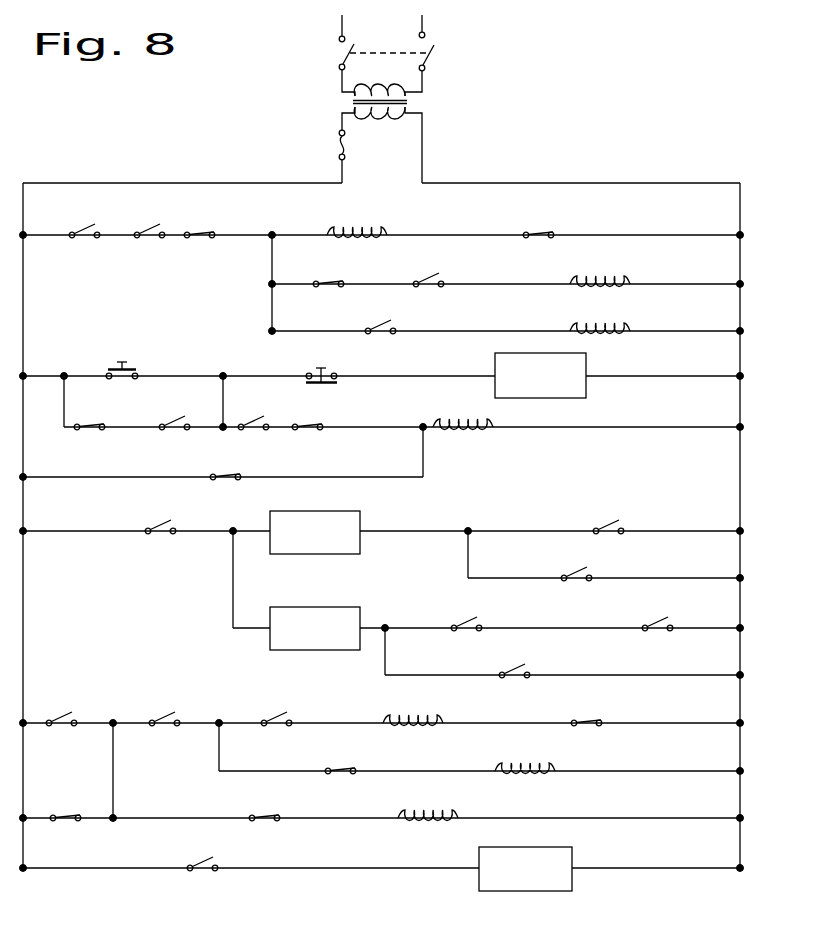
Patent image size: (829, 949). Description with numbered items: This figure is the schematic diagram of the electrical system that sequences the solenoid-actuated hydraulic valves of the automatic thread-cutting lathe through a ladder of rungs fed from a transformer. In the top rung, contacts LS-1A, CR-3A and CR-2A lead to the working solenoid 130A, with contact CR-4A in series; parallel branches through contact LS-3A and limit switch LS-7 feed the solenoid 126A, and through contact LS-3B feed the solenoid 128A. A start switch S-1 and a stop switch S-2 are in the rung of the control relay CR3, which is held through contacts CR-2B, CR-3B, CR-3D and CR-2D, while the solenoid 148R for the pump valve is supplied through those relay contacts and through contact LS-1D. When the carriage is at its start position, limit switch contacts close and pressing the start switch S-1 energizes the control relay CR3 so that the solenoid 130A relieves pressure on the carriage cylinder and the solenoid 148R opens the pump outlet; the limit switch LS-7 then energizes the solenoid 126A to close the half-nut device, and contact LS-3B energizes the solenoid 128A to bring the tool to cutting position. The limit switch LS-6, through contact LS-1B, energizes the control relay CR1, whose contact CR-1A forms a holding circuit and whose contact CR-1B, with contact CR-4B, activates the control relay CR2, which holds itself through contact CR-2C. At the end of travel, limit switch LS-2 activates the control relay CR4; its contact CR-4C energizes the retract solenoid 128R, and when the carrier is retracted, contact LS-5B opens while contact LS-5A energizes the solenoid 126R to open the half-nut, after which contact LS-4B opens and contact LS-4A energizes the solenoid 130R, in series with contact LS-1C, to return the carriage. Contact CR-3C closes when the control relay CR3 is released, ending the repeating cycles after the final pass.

The contact LS-1A of limit switch LS-1 LS-1A is at (95, 221).
The contact CR-3A of relay CR-3 CR-3A is at (158, 221).
The contact CR-2A of relay CR-2 CR-2A is at (217, 221).
The solenoid 130A is at (357, 221).
The contact CR-4A of relay CR-4 CR-4A is at (536, 221).
The contact LS-3A of limit switch LS-3 LS-3A is at (321, 270).
The limit switch LS-7 is at (428, 270).
The solenoid 126A is at (600, 270).
The contact LS-3B of limit switch LS-3 LS-3B is at (376, 318).
The solenoid 128A is at (600, 318).
The start switch S-1 is at (122, 359).
The stop switch S-2 is at (321, 361).
The relay CR-3 CR3 is at (540, 375).
The contact CR-2B of relay CR-2 CR-2B is at (90, 414).
The contact CR-3B of relay CR-3 CR-3B is at (174, 414).
The contact CR-3D of relay CR-3 CR-3D is at (251, 414).
The contact CR-2D of relay CR-2 CR-2D is at (314, 414).
The solenoid 148R is at (463, 414).
The contact LS-1D of limit switch LS-1 LS-1D is at (228, 467).
The limit switch LS-6 is at (160, 516).
The relay CR-1 CR1 is at (315, 532).
The contact CR-1A of relay CR-1 CR-1A is at (604, 517).
The contact LS-1B of limit switch LS-1 LS-1B is at (578, 565).
The relay CR-2 CR2 is at (315, 628).
The contact CR-1B of relay CR-1 CR-1B is at (464, 615).
The contact CR-4B of relay CR-4 CR-4B is at (654, 614).
The contact CR-2C of relay CR-2 CR-2C is at (513, 662).
The contact CR-4C of relay CR-4 CR-4C is at (66, 709).
The contact LS-5A of limit switch LS-5 LS-5A is at (158, 709).
The contact LS-4A of limit switch LS-4 LS-4A is at (273, 709).
The solenoid 130R is at (413, 709).
The contact LS-1C of limit switch LS-1 LS-1C is at (588, 709).
The contact LS-4B of limit switch LS-4 LS-4B is at (334, 759).
The solenoid 126R is at (525, 759).
The contact CR-3C of relay CR-3 CR-3C is at (61, 807).
The contact LS-5B of limit switch LS-5 LS-5B is at (263, 807).
The solenoid 128R is at (428, 807).
The limit switch LS-2 is at (202, 855).
The relay CR-4 CR4 is at (525, 869).